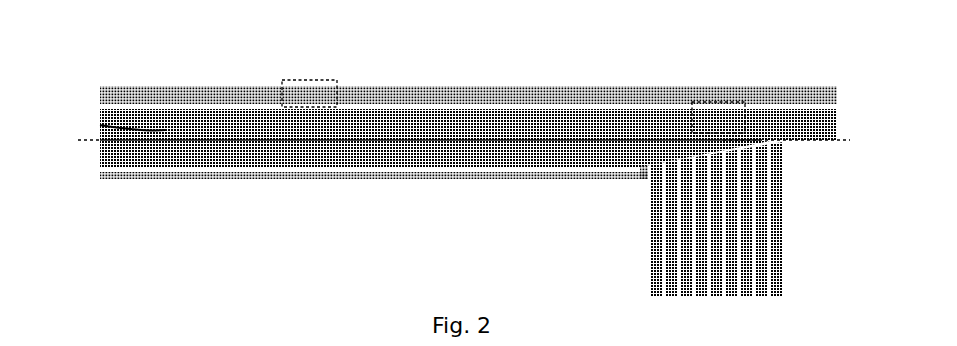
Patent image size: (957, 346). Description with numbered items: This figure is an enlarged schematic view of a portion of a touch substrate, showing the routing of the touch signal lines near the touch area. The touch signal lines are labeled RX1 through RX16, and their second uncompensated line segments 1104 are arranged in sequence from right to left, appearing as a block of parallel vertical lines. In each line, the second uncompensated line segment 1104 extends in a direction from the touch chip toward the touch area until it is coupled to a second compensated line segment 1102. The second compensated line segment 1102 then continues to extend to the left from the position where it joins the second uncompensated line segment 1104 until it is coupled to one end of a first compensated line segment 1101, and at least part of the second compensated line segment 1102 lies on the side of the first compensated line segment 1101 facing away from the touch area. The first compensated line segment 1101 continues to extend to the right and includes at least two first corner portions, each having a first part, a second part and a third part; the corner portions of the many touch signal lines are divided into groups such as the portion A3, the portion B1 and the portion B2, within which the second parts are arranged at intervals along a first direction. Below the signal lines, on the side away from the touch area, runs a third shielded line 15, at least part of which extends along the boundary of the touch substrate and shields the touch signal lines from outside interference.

The third shielded line 15 is at (176, 180).
The first compensated line segment 1101 is at (394, 118).
The second compensated line segment 1102 is at (412, 163).
The second uncompensated line segment 1104 is at (776, 220).
The portion A3 is at (100, 125).
The portion B1 is at (312, 80).
The portion B2 is at (714, 105).
The touch signal line RX1 is at (782, 270).
The touch signal line RX16 is at (660, 262).